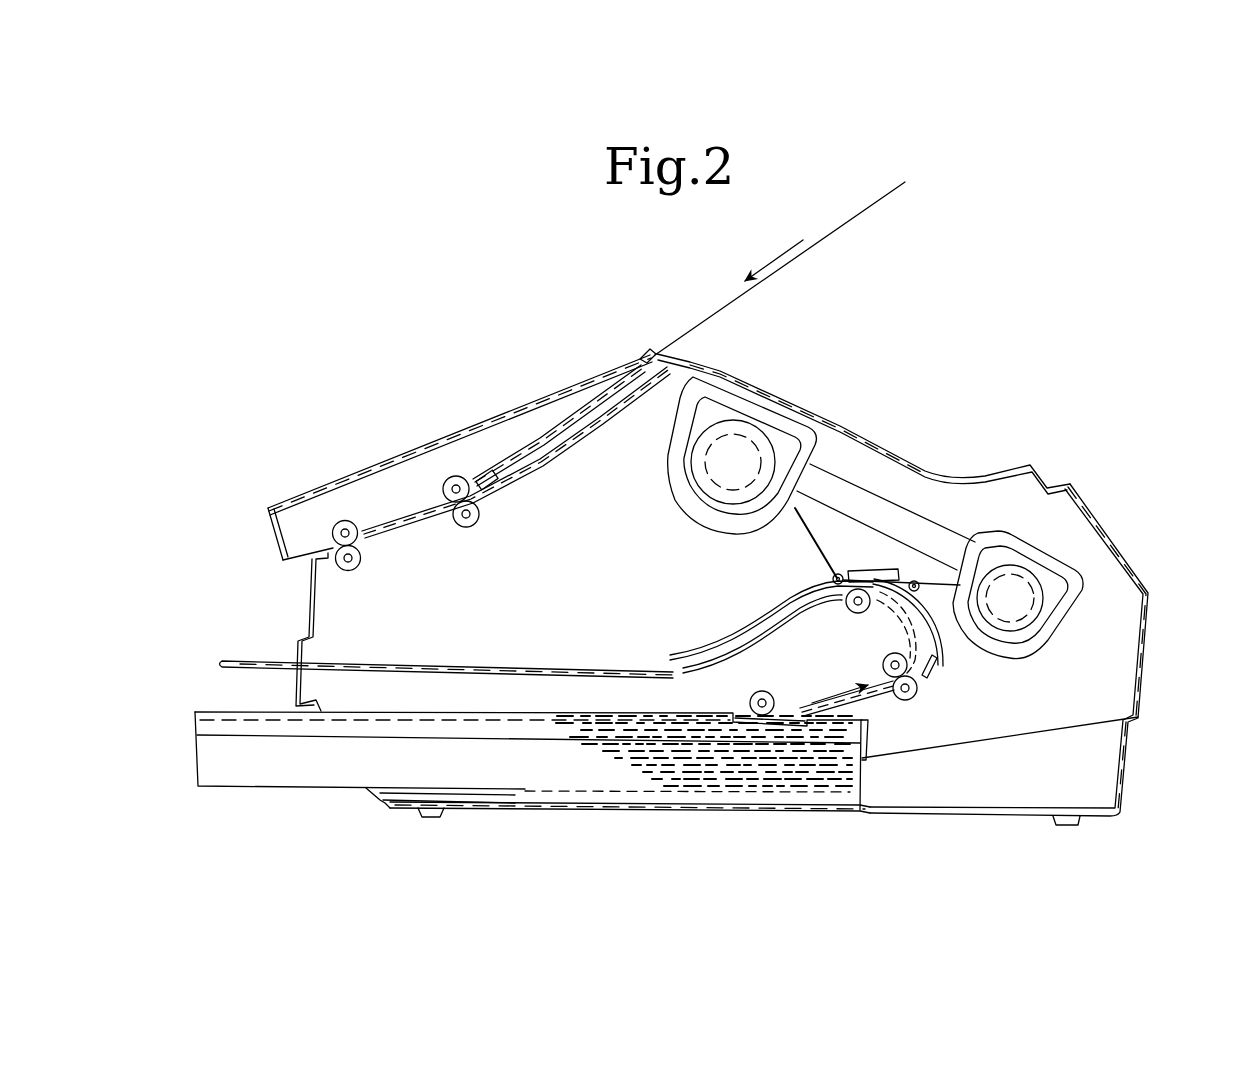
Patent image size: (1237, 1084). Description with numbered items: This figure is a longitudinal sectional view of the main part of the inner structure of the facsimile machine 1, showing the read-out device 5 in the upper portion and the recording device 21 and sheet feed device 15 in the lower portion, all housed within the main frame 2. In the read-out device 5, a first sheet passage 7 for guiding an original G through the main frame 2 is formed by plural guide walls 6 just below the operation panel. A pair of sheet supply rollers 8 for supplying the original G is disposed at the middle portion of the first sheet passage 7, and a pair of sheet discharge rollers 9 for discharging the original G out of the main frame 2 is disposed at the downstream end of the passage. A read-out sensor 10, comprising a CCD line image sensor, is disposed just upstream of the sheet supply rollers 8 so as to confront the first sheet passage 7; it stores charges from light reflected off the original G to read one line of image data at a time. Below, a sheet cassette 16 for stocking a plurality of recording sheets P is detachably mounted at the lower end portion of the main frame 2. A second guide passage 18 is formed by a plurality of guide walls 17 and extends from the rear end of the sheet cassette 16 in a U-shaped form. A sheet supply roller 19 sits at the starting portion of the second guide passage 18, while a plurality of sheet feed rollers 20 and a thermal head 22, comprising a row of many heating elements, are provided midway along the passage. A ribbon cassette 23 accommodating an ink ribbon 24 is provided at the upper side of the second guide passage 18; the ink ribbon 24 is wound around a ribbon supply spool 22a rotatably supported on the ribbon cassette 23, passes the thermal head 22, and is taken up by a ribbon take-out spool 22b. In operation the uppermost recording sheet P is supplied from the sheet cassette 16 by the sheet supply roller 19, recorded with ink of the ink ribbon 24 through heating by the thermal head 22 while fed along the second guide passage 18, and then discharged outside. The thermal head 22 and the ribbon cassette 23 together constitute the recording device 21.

The image forming apparatus 1 is at (942, 405).
The main frame 2 is at (1128, 556).
The read-out device 5 is at (420, 432).
The guide walls 6 is at (418, 513).
The first sheet passage 7 is at (528, 478).
The sheet supply rollers 8 is at (471, 525).
The sheet discharge rollers 9 is at (351, 572).
The read-out sensor 10 is at (489, 470).
The sheet feed device 15 is at (885, 742).
The sheet cassette 16 is at (262, 776).
The guide walls 17 is at (742, 634).
The second guide passage 18 is at (936, 687).
The sheet supply roller 19 is at (752, 698).
The sheet feed rollers 20 is at (860, 614).
The recording device 21 is at (775, 575).
The thermal head 22 is at (868, 580).
The ribbon supply spool 22a is at (1030, 580).
The ribbon take-out spool 22b is at (715, 505).
The ribbon cassette 23 is at (940, 520).
The ink ribbon 24 is at (793, 530).
The original G is at (815, 257).
The recording sheet P is at (705, 773).